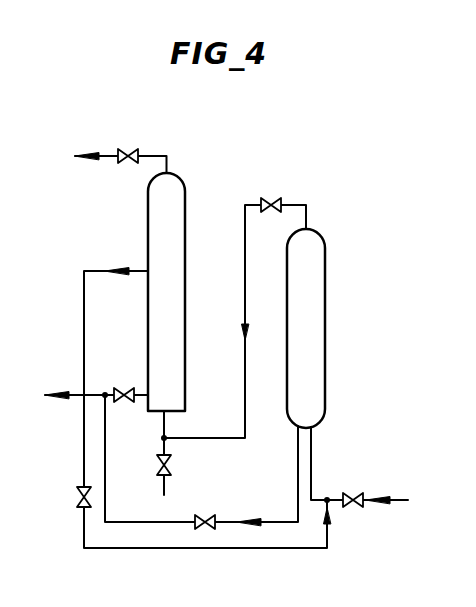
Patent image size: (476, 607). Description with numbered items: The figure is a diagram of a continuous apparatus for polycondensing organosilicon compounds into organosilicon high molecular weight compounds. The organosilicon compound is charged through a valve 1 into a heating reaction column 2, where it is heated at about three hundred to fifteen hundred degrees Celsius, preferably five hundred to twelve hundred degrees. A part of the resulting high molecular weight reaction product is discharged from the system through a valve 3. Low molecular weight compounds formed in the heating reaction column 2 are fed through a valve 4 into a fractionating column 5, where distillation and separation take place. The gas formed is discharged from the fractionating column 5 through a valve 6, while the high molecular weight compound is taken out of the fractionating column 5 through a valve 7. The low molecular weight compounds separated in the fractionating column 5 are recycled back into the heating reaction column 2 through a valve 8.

The valve 1 is at (354, 496).
The heating reaction column 2 is at (320, 331).
The valve 3 is at (205, 517).
The valve 4 is at (271, 199).
The fractionating column 5 is at (182, 288).
The valve 6 is at (130, 150).
The valve 7 is at (125, 389).
The valve 8 is at (78, 496).